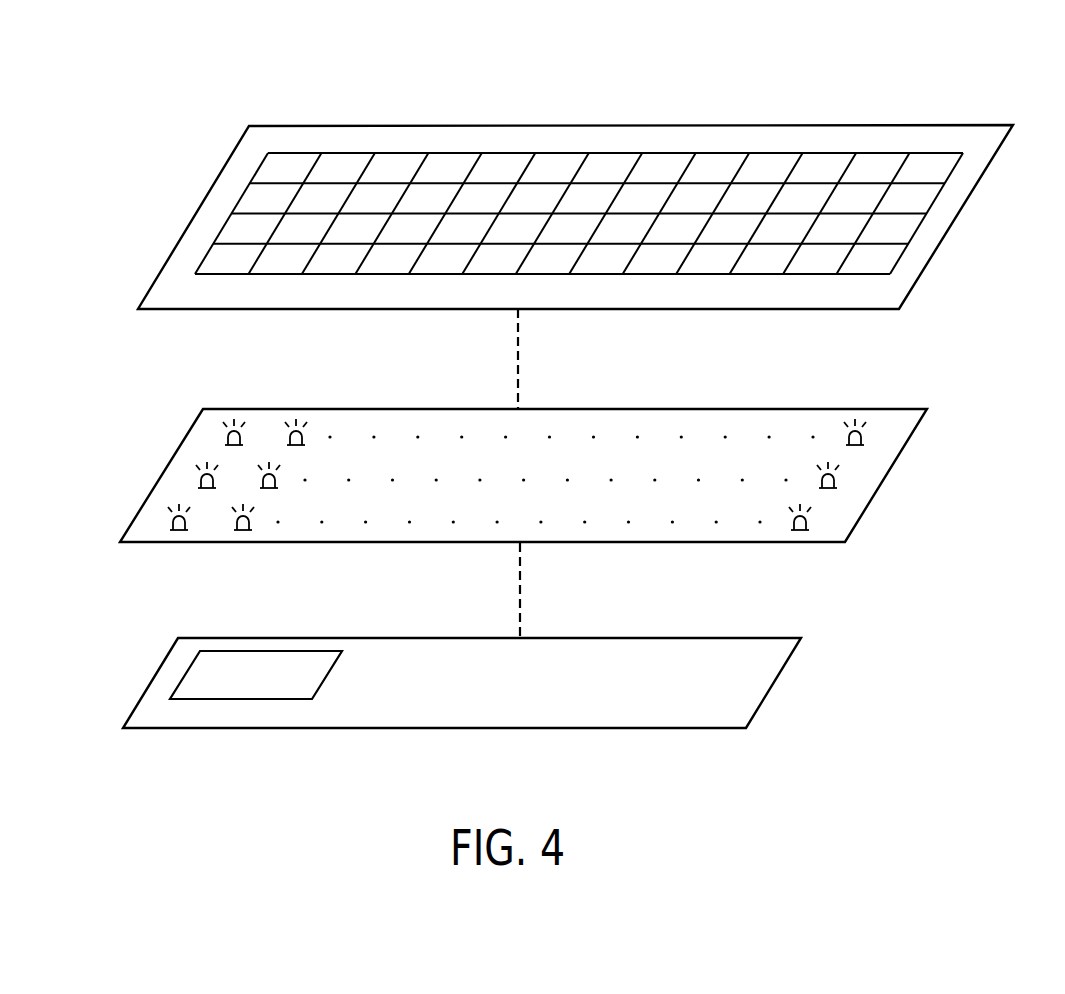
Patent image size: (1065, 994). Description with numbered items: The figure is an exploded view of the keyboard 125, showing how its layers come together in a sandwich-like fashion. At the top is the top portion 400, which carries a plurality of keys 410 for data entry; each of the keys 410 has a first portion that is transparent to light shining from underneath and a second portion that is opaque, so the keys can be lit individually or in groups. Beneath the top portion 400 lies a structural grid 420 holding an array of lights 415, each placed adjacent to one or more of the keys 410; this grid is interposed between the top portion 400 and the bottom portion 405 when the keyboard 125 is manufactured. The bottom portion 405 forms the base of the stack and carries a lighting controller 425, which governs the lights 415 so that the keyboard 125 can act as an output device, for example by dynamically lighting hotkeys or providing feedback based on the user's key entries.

The keyboard 125 is at (144, 114).
The top portion 400 is at (395, 125).
The keys 410 is at (955, 165).
The lights 415 is at (934, 481).
The structural grid 420 is at (363, 408).
The bottom portion 405 is at (573, 729).
The lighting controller 425 is at (252, 700).